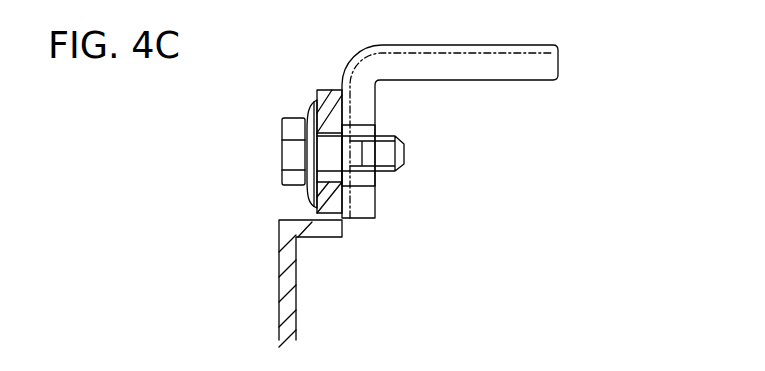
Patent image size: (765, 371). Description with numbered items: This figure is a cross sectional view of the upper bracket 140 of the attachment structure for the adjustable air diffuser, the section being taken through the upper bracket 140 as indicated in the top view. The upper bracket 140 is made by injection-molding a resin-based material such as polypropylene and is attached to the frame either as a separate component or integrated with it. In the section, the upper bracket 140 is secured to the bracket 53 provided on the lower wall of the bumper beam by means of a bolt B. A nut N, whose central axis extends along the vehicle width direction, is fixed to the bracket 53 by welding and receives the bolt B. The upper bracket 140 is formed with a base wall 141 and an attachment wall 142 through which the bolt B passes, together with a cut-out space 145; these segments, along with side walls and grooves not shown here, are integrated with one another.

The upper bracket 140 is at (314, 173).
The base wall 141 is at (287, 257).
The attachment wall 142 is at (333, 205).
The cut-out space 145 is at (338, 250).
The bracket 53 is at (350, 98).
The bolt B is at (402, 153).
The nut N is at (372, 179).